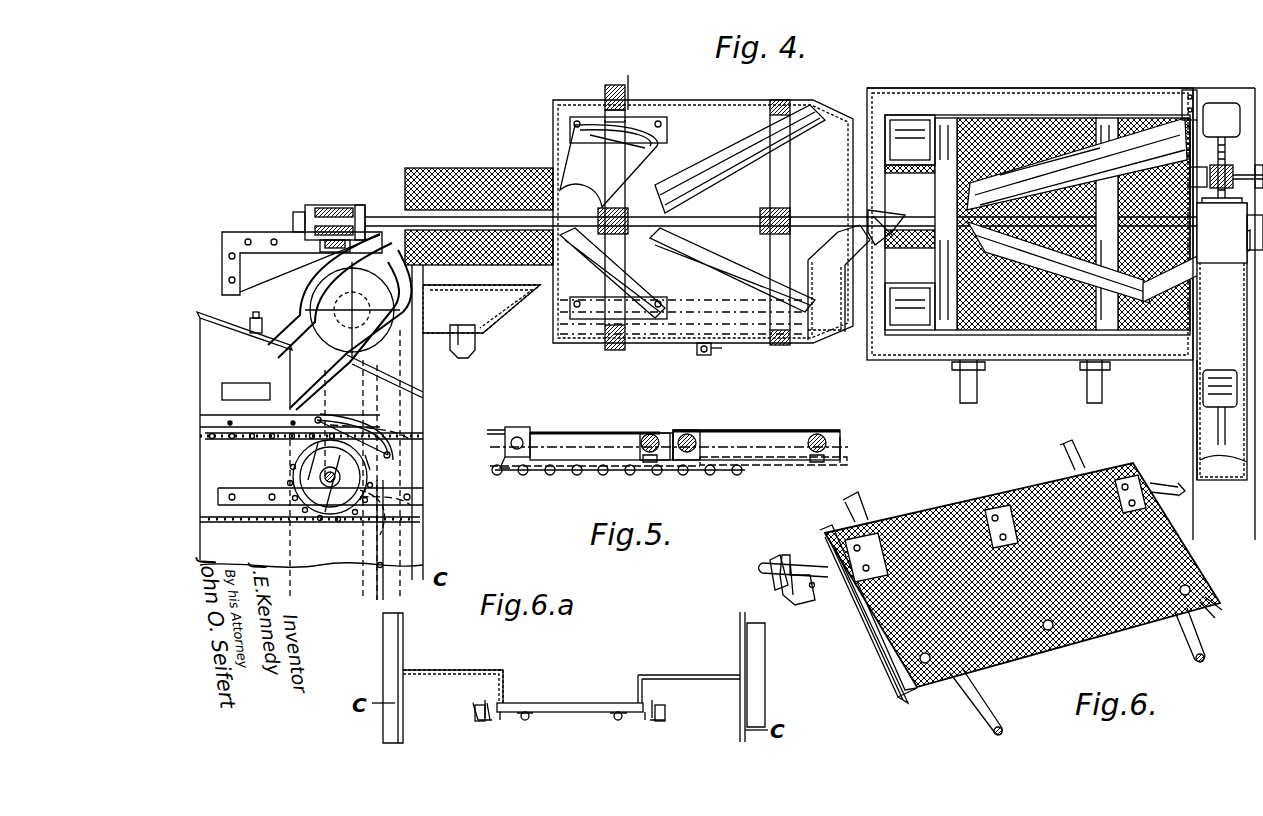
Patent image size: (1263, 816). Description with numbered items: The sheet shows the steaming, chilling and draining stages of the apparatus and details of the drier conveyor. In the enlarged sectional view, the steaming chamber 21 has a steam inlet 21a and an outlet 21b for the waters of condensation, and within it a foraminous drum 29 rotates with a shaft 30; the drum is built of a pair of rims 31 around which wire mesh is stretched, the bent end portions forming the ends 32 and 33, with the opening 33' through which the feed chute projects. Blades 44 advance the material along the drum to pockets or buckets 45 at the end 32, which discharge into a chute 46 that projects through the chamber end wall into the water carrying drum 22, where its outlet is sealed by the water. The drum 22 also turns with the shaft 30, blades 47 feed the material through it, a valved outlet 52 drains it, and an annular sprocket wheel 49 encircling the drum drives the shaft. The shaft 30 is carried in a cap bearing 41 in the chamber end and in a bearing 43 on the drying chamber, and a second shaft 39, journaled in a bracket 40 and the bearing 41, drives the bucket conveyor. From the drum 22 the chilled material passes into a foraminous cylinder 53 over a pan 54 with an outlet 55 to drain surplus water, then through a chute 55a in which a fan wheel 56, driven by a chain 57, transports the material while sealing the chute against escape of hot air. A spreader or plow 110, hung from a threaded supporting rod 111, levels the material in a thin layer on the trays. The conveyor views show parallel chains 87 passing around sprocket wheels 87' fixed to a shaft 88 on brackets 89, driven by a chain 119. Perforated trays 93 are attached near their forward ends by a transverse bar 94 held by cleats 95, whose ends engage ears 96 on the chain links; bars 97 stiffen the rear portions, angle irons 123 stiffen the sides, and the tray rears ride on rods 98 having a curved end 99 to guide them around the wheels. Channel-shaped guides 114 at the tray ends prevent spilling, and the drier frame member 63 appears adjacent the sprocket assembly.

In FIG. 4, the steaming chamber 21 is at (1087, 92).
In FIG. 4, the steam inlet 21a is at (980, 392).
In FIG. 4, the outlet 21b is at (1103, 390).
In FIG. 4, the water carrying drum 22 is at (665, 343).
In FIG. 4, the foraminous drum 29 is at (920, 340).
In FIG. 4, the shaft 30 is at (378, 215).
In FIG. 4, the rims 31 is at (1029, 236).
In FIG. 4, the end of drum 32 is at (870, 110).
In FIG. 4, the end of drum 33 is at (1222, 314).
In FIG. 4, the opening 33' is at (1196, 266).
In FIG. 4, the shaft 39 is at (1226, 165).
In FIG. 4, the bracket 40 is at (1182, 115).
In FIG. 4, the bearing 41 is at (1230, 230).
In FIG. 4, the bearing 43 is at (335, 205).
In FIG. 4, the blades 44 is at (1105, 152).
In FIG. 4, the pockets or buckets 45 is at (910, 130).
In FIG. 4, the chute 46 is at (889, 214).
In FIG. 4, the blades 47 is at (770, 125).
In FIG. 4, the annular sprocket wheel 49 is at (617, 86).
In FIG. 4, the valved outlet 52 is at (712, 352).
In FIG. 4, the foraminous cylinder 53 is at (462, 168).
In FIG. 4, the pan 54 is at (490, 318).
In FIG. 4, the outlet 55 is at (470, 355).
In FIG. 4, the chute 55a is at (292, 360).
In FIG. 4, the fan wheel 56 is at (360, 300).
In FIG. 4, the chain 57 is at (410, 380).
In FIG. 4, the wall plate 63 is at (425, 556).
In FIG. 4, the chains 87 is at (311, 448).
In FIG. 5, the chains 87 is at (618, 483).
In FIG. 6, the chains 87 is at (796, 602).
In FIG. 6A, the chains 87 is at (569, 732).
In FIG. 4, the sprocket wheels 87' is at (356, 478).
In FIG. 4, the shaft 88 is at (320, 490).
In FIG. 4, the brackets 89 is at (412, 500).
In FIG. 4, the trays 93 is at (412, 420).
In FIG. 5, the trays 93 is at (598, 428).
In FIG. 6, the trays 93 is at (900, 570).
In FIG. 6A, the trays 93 is at (575, 703).
In FIG. 5, the bar 94 is at (525, 440).
In FIG. 6, the bar 94 is at (812, 560).
In FIG. 6A, the bar 94 is at (475, 710).
In FIG. 6, the cleats 95 is at (848, 600).
In FIG. 4, the ears 96 is at (330, 425).
In FIG. 5, the ears 96 is at (515, 462).
In FIG. 6, the ears 96 is at (780, 558).
In FIG. 6A, the ears 96 is at (482, 702).
In FIG. 5, the bars 97 is at (650, 433).
In FIG. 6, the bars 97 is at (1020, 650).
In FIG. 6A, the bars 97 is at (503, 715).
In FIG. 4, the rods 98 is at (210, 440).
In FIG. 5, the rods 98 is at (782, 467).
In FIG. 6, the rods 98 is at (990, 712).
In FIG. 6A, the rods 98 is at (525, 720).
In FIG. 4, the curved end 99 is at (372, 462).
In FIG. 4, the spreader or plow 110 is at (246, 392).
In FIG. 4, the supporting rod 111 is at (282, 300).
In FIG. 6A, the guides 114 is at (505, 672).
In FIG. 4, the chain 119 is at (384, 540).
In FIG. 6, the angle iron 123 is at (883, 680).
In FIG. 6A, the angle iron 123 is at (487, 700).